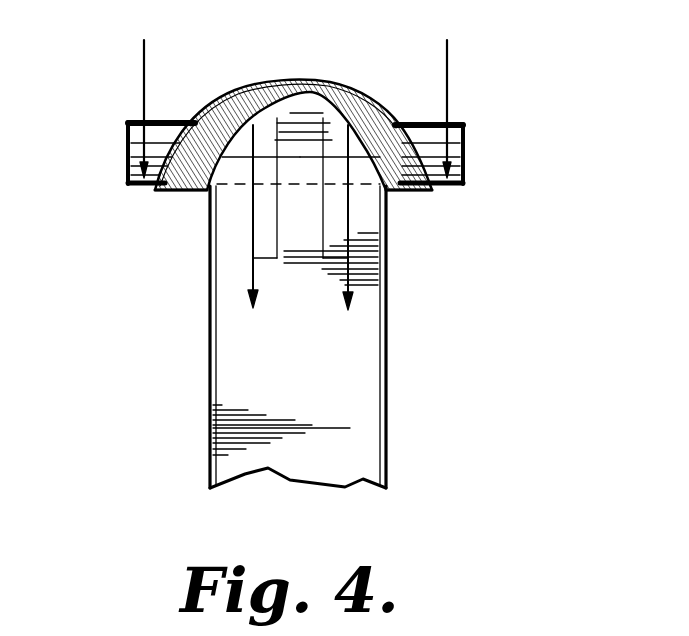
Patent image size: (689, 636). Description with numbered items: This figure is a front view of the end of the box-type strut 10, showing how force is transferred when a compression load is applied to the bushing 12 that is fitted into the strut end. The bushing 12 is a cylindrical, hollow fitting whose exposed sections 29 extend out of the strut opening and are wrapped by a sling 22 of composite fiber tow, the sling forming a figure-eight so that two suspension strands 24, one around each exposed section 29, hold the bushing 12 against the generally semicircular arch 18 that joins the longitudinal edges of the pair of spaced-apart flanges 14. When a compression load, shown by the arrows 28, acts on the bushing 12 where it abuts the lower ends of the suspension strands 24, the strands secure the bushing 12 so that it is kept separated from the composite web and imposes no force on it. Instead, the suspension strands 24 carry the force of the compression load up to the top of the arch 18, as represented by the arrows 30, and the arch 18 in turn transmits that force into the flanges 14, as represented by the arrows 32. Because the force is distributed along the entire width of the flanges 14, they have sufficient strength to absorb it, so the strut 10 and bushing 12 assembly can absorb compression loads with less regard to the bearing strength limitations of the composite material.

The box-type strut 10 is at (470, 352).
The bushing 12 is at (466, 146).
The flange 14 is at (323, 375).
The arch 18 is at (384, 200).
The sling 22 is at (296, 80).
The suspension strand 24 is at (170, 199).
The arrows (compression load) 28 is at (143, 52).
The exposed section of the bushing 29 is at (162, 118).
The arrows (force to arch) 30 is at (277, 230).
The arrows (force to flanges) 32 is at (253, 272).